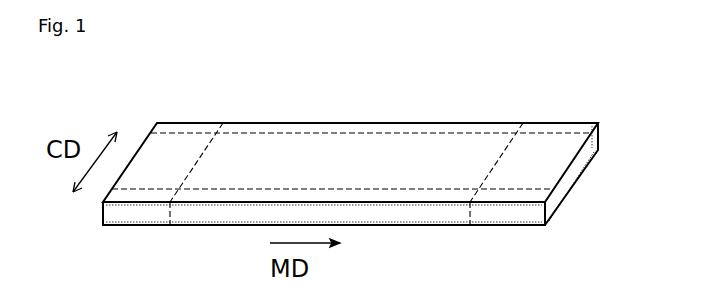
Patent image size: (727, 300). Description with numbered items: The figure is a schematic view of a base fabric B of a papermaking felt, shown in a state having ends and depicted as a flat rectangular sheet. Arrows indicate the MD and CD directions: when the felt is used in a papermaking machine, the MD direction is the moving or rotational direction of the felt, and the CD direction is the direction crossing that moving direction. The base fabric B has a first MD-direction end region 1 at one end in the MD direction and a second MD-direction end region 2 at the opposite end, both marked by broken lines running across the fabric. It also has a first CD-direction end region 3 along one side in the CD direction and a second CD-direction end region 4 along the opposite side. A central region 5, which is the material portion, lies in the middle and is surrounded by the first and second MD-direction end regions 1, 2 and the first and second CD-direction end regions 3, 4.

The first MD-direction end region 1 is at (177, 143).
The second MD-direction end region 2 is at (548, 145).
The first CD-direction end region 3 is at (260, 188).
The second CD-direction end region 4 is at (326, 132).
The central region 5 is at (375, 148).
The base fabric B is at (430, 227).